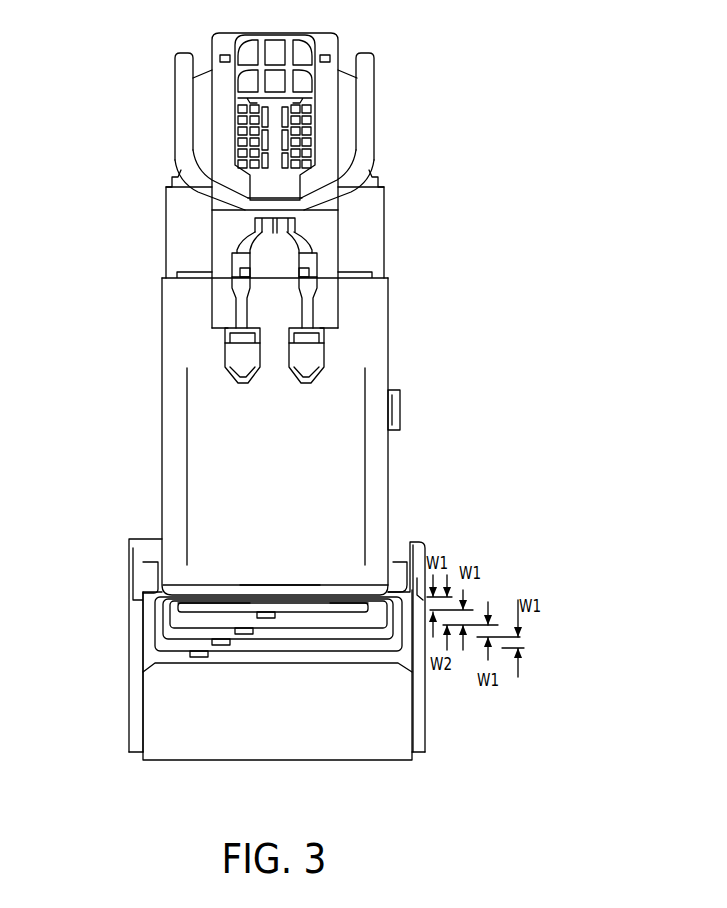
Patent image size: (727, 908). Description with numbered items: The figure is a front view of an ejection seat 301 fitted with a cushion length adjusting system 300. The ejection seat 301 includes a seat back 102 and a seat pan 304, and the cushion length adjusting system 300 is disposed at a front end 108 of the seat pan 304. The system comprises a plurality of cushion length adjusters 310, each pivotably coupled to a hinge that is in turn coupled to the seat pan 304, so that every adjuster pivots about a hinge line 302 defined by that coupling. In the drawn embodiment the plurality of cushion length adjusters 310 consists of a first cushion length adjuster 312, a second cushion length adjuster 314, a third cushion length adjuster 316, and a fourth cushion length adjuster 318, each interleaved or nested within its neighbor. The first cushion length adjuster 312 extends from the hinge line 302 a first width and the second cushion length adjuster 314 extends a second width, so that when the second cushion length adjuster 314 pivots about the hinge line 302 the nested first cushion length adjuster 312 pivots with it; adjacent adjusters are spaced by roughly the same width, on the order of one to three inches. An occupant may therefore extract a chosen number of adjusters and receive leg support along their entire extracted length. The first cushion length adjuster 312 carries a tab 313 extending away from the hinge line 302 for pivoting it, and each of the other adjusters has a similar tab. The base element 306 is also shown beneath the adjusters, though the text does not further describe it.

The seat back 102 is at (162, 350).
The front end 108 is at (148, 609).
The cushion length adjusting system 300 is at (495, 526).
The ejection seat 301 is at (490, 294).
The hinge line 302 is at (302, 606).
The seat pan 304 is at (283, 590).
The base 306 is at (148, 643).
The plurality of cushion length adjusters 310 is at (356, 596).
The first cushion length adjuster 312 is at (216, 600).
The tab 313 is at (265, 611).
The second cushion length adjuster 314 is at (330, 618).
The third cushion length adjuster 316 is at (310, 630).
The fourth cushion length adjuster 318 is at (262, 641).